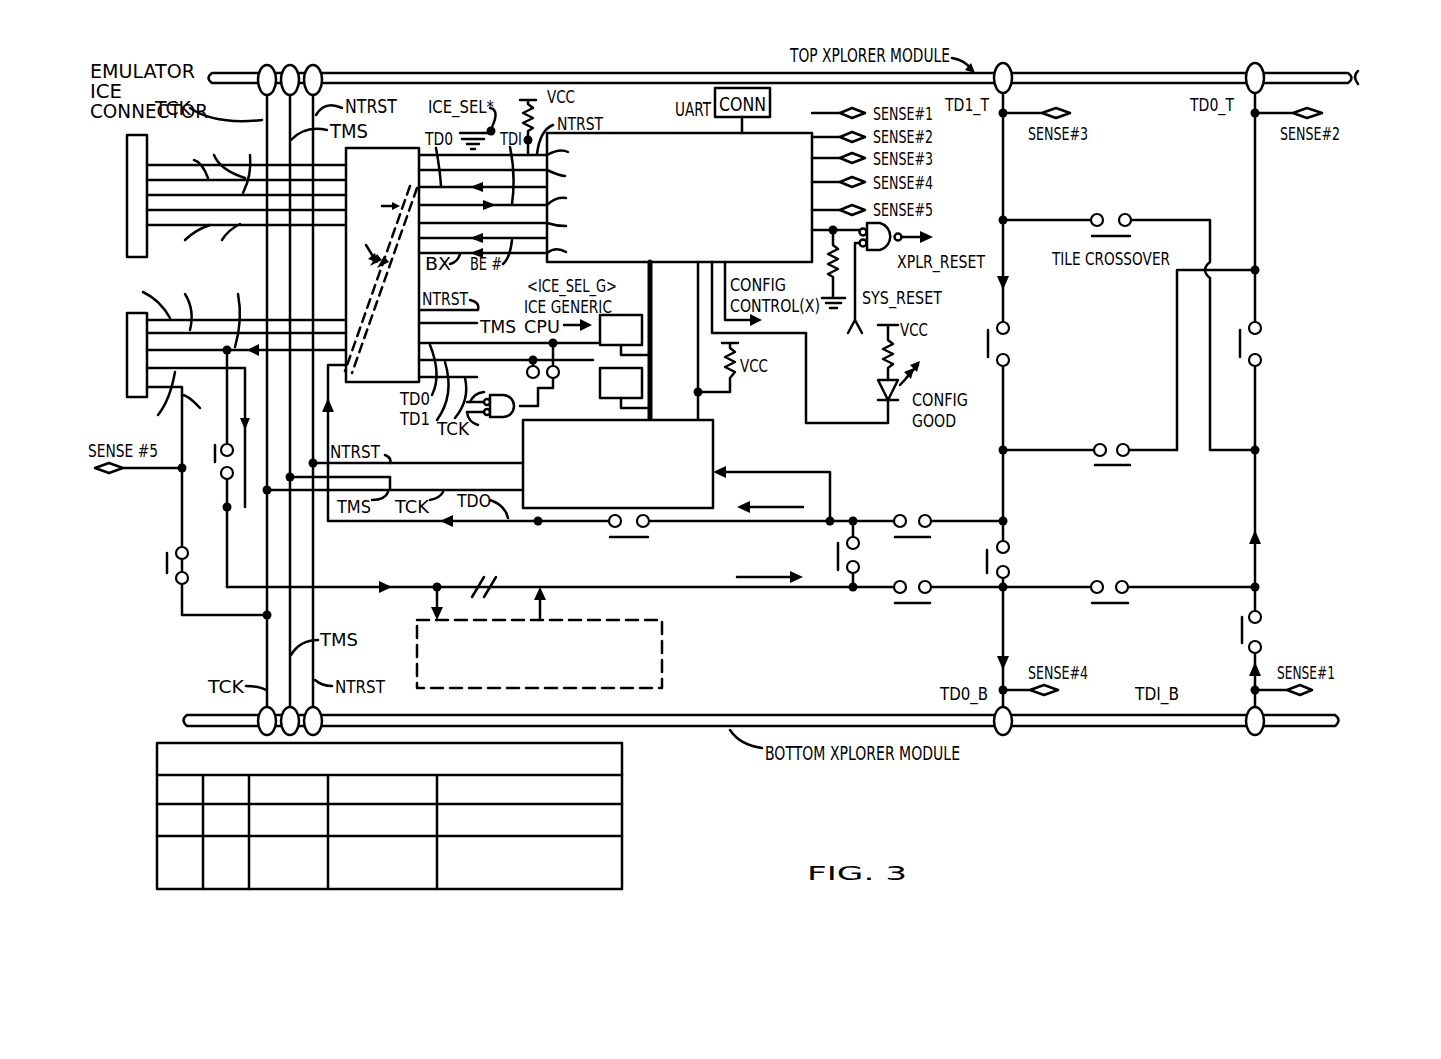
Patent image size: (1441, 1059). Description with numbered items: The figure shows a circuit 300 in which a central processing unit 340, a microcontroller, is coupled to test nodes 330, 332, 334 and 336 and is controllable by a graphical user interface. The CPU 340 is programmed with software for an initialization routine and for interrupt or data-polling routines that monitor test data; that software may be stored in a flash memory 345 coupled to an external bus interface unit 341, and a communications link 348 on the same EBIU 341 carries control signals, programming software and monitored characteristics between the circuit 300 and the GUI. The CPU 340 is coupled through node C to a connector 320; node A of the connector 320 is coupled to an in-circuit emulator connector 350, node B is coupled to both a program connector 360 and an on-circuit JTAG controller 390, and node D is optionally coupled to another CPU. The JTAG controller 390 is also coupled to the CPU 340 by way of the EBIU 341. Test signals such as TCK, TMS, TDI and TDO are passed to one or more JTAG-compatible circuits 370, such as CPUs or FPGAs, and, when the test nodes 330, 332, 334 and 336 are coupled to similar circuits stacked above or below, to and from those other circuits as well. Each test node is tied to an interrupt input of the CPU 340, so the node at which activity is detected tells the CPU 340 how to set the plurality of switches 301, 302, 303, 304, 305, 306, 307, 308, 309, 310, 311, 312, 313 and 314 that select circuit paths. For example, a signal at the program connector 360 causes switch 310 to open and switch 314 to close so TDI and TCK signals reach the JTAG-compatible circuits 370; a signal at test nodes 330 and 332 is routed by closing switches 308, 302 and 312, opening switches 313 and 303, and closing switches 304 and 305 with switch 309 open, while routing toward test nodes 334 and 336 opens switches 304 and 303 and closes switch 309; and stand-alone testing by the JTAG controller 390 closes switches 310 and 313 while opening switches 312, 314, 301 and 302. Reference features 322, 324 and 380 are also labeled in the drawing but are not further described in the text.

The circuit 300 is at (1345, 222).
The switch 301 is at (928, 580).
The switch 302 is at (928, 515).
The switch 303 is at (1009, 570).
The switch 304 is at (1125, 578).
The switch 305 is at (1262, 326).
The switch 306 is at (1125, 213).
The switch 307 is at (1127, 444).
The switch 308 is at (1010, 326).
The switch 309 is at (1262, 620).
The switch 310 is at (209, 467).
The switch 311 is at (559, 379).
The switch 312 is at (629, 541).
The switch 313 is at (835, 558).
The switch 314 is at (167, 565).
The connector 320 is at (319, 249).
The TDO return line 322 is at (432, 446).
The cross switch path 324 is at (370, 345).
The test node 330 is at (1008, 62).
The test node 332 is at (1260, 62).
The test node 334 is at (1005, 736).
The test node 336 is at (1258, 736).
The central processing unit 340 is at (774, 209).
The external bus interface unit 341 is at (652, 365).
The flash memory 345 is at (638, 395).
The communications link 348 is at (638, 342).
The in-circuit emulator connector 350 is at (127, 190).
The program connector 360 is at (127, 365).
The JTAG-compatible circuits 370 is at (662, 660).
The cross switch table 380 is at (622, 818).
The on-circuit JTAG controller 390 is at (713, 455).